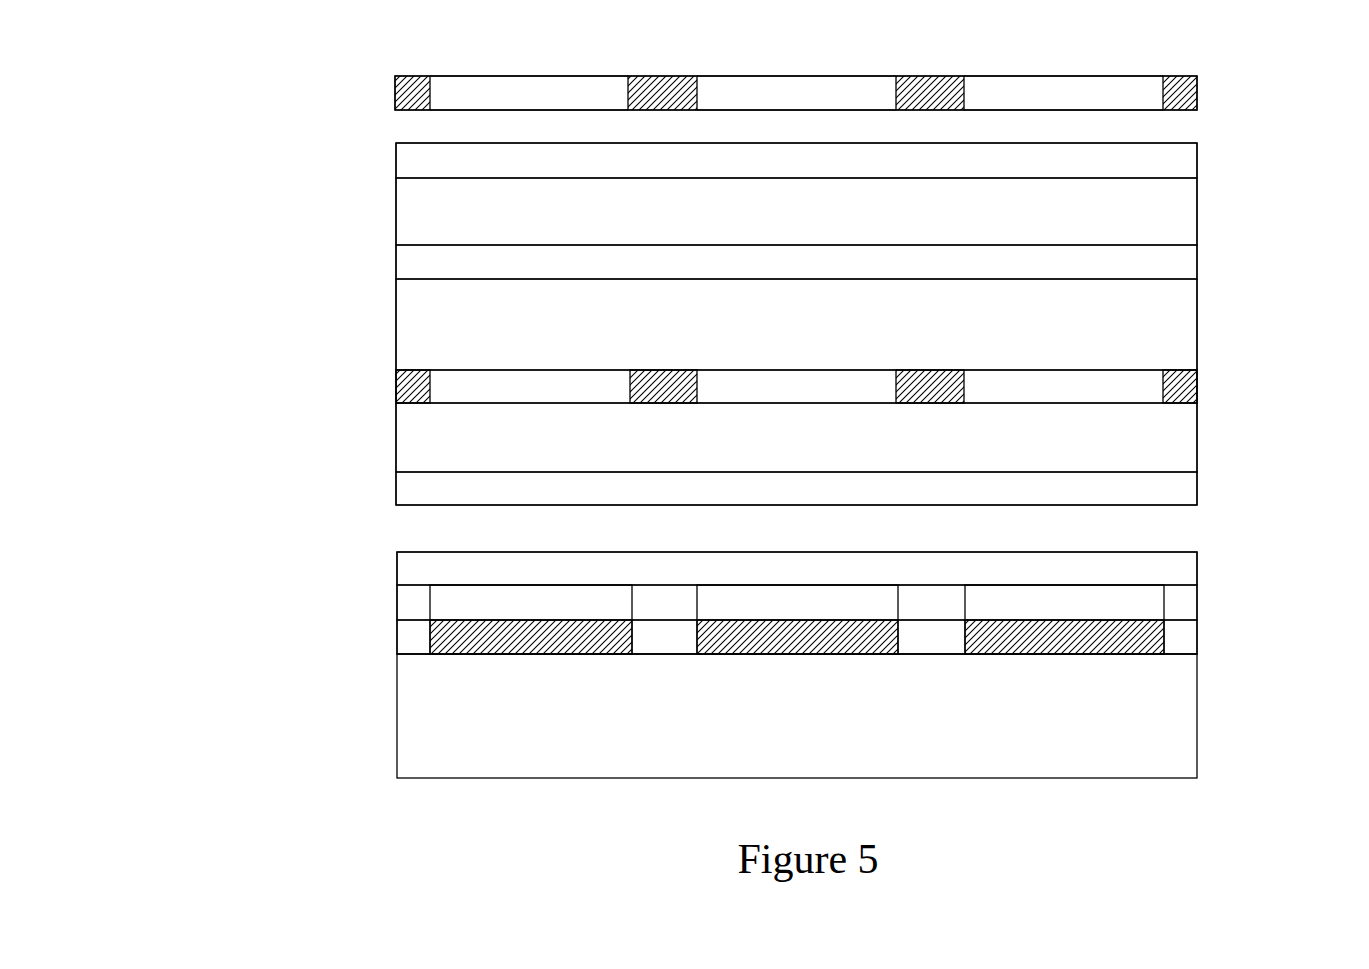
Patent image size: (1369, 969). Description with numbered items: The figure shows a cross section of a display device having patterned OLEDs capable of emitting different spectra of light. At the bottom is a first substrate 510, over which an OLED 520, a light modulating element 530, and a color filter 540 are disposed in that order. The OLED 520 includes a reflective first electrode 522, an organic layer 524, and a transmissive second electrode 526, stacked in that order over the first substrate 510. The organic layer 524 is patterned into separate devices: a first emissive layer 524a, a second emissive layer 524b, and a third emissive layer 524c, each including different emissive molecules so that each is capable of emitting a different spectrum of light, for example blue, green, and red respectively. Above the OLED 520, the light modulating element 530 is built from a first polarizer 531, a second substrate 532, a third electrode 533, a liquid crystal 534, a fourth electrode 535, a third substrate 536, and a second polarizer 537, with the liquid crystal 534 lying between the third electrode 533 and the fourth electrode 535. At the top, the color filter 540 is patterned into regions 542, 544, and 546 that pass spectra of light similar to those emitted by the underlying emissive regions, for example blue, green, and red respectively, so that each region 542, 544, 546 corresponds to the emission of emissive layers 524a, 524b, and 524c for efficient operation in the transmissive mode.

The first substrate 510 is at (397, 717).
The OLED 520 is at (397, 562).
The reflective first electrode 522 is at (1197, 635).
The organic layer 524 is at (1197, 600).
The first emissive layer 524a is at (538, 585).
The second emissive layer 524b is at (777, 585).
The third emissive layer 524c is at (1045, 585).
The transmissive second electrode 526 is at (1197, 567).
The light modulating element 530 is at (396, 155).
The first polarizer 531 is at (1197, 487).
The second substrate 532 is at (1197, 437).
The third electrode 533 is at (1063, 403).
The liquid crystal 534 is at (1197, 323).
The fourth electrode 535 is at (1197, 262).
The third substrate 536 is at (1197, 210).
The second polarizer 537 is at (1197, 160).
The color filter 540 is at (395, 92).
The region 542 is at (530, 76).
The region 544 is at (797, 76).
The region 546 is at (1063, 76).